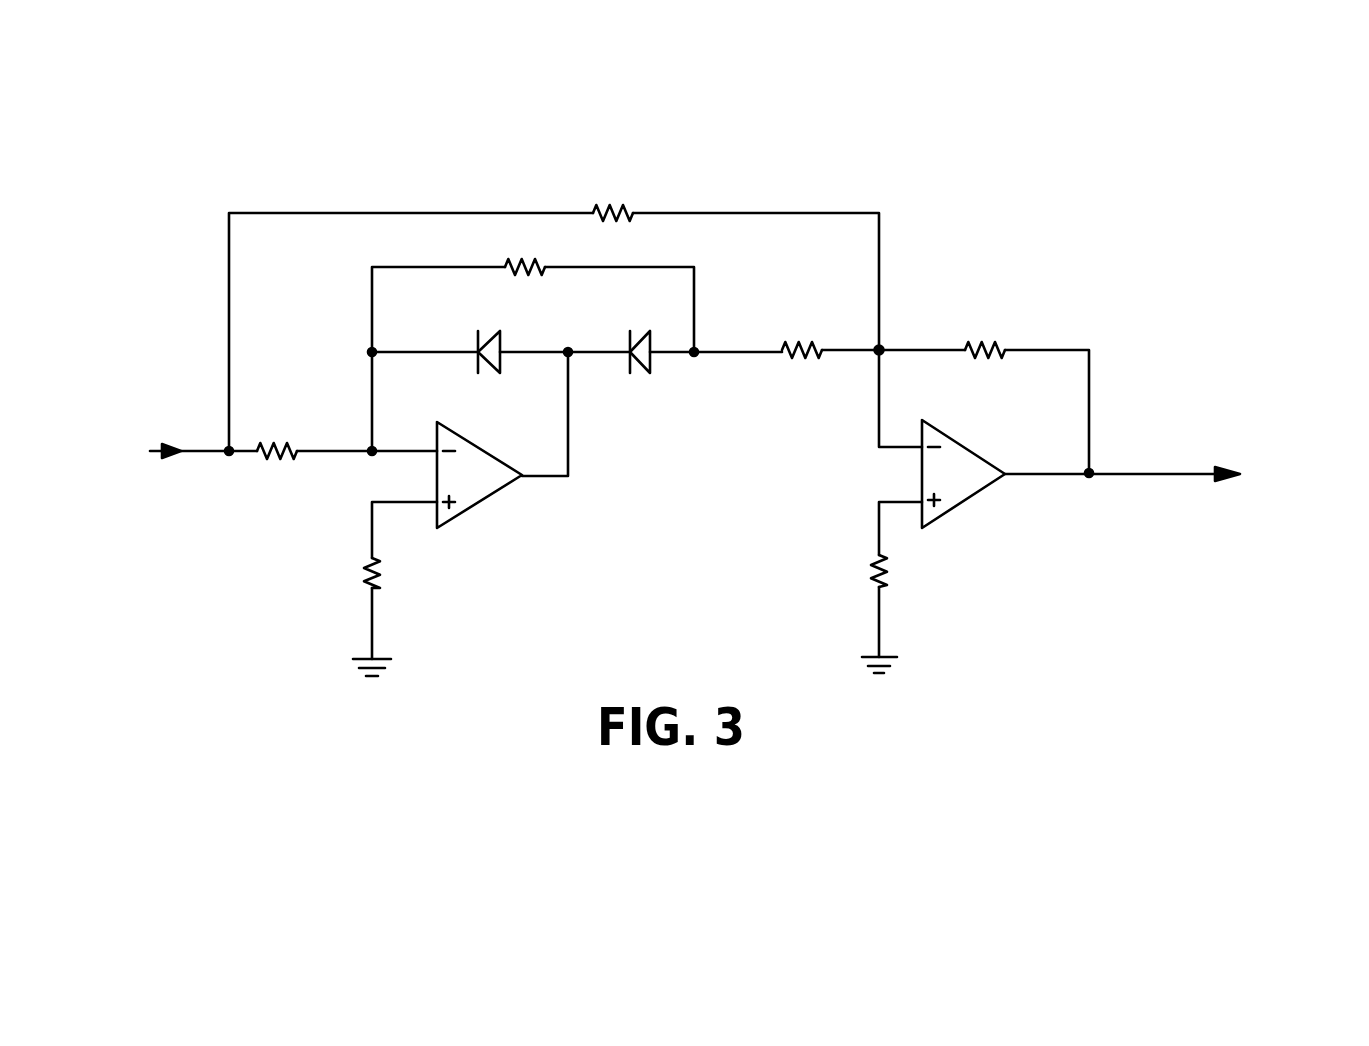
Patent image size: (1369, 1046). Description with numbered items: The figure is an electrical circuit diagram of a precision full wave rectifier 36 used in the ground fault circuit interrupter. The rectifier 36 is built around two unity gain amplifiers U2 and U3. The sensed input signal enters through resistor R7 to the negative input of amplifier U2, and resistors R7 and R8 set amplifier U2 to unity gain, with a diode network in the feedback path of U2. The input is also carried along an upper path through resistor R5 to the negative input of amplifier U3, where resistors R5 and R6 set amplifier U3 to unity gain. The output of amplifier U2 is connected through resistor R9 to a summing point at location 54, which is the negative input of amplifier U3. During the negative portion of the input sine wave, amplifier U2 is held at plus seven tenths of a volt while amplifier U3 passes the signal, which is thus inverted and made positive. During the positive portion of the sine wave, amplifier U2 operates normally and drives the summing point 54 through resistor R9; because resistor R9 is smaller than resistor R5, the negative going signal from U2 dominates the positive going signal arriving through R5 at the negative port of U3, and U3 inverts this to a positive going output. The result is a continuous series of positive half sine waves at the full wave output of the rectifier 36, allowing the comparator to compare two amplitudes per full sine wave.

The precision full wave rectifier 36 is at (719, 428).
The summing point 54 is at (873, 357).
The resistor R5 is at (613, 201).
The resistor R6 is at (985, 337).
The resistor R7 is at (277, 466).
The resistor R8 is at (525, 255).
The resistor R9 is at (802, 365).
The unity gain amplifier U2 is at (479, 475).
The unity gain amplifier U3 is at (963, 474).